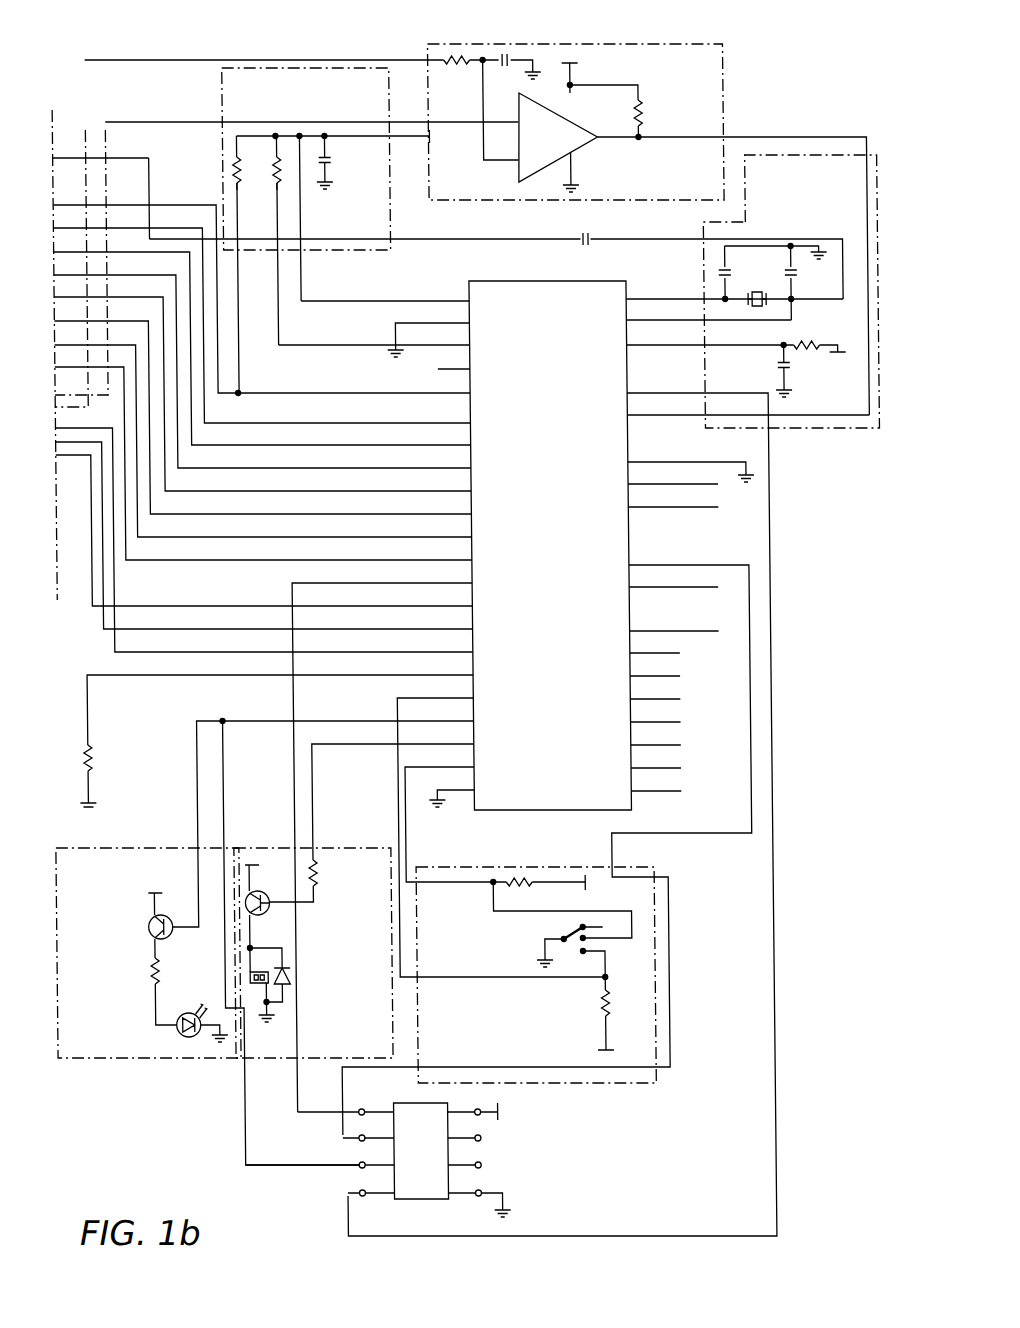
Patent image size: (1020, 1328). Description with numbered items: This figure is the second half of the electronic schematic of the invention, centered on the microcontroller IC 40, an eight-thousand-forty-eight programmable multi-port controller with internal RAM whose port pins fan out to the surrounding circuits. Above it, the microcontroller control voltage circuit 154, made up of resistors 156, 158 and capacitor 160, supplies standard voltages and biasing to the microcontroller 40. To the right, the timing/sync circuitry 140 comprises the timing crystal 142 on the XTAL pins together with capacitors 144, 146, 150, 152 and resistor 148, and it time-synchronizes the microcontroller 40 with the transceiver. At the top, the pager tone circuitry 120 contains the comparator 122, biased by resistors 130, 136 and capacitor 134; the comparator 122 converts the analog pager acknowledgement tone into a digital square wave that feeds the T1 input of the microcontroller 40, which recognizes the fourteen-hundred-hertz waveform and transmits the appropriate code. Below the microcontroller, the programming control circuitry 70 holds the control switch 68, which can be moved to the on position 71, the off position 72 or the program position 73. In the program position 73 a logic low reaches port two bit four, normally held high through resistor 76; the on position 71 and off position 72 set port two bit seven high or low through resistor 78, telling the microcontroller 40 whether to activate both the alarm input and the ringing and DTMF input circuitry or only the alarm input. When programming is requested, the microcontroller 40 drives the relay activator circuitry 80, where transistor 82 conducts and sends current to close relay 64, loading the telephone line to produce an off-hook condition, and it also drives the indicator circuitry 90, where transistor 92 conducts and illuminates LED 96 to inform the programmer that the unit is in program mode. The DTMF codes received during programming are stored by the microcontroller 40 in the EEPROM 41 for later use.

The microcontroller IC 40 is at (562, 550).
The EEPROM 41 is at (422, 1161).
The relay 64 is at (250, 970).
The control switch 68 is at (552, 938).
The programming control circuitry 70 is at (618, 1083).
The on position 71 is at (590, 924).
The off position 72 is at (586, 942).
The program position 73 is at (575, 955).
The resistor 76 is at (604, 1000).
The resistor 78 is at (527, 875).
The relay activator circuitry 80 is at (343, 848).
The transistor 82 is at (256, 892).
The indicator circuitry 90 is at (143, 1058).
The transistor 92 is at (160, 936).
The LED 96 is at (172, 1011).
The pager tone circuitry 120 is at (630, 44).
The comparator 122 is at (566, 149).
The resistor 130 is at (640, 108).
The capacitor 134 is at (505, 52).
The resistor 136 is at (455, 70).
The timing/sync circuitry 140 is at (800, 430).
The timing crystal 142 is at (755, 288).
The capacitor 144 is at (716, 272).
The capacitor 146 is at (795, 274).
The resistor 148 is at (800, 343).
The capacitor 150 is at (790, 372).
The capacitor 152 is at (587, 244).
The microcontroller control voltage circuit 154 is at (221, 88).
The resistor 156 is at (226, 177).
The resistor 158 is at (274, 180).
The capacitor 160 is at (330, 168).